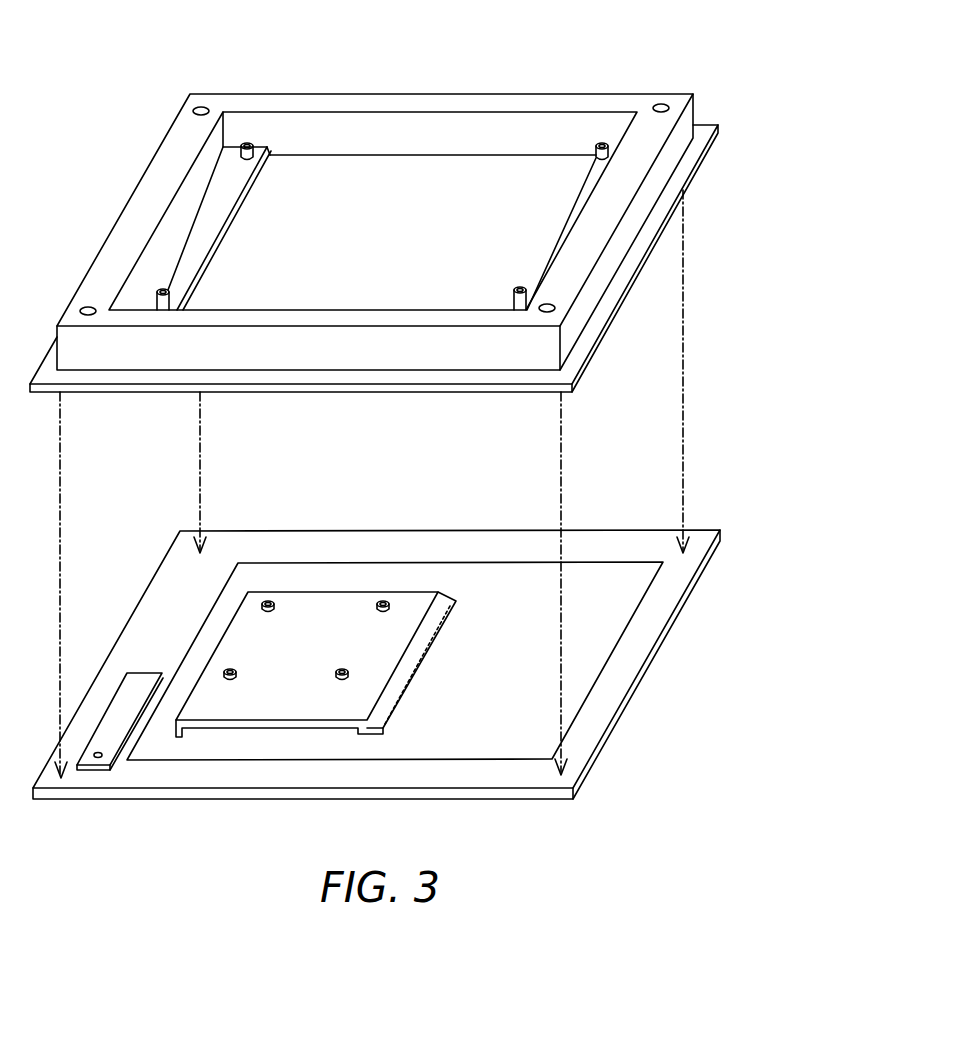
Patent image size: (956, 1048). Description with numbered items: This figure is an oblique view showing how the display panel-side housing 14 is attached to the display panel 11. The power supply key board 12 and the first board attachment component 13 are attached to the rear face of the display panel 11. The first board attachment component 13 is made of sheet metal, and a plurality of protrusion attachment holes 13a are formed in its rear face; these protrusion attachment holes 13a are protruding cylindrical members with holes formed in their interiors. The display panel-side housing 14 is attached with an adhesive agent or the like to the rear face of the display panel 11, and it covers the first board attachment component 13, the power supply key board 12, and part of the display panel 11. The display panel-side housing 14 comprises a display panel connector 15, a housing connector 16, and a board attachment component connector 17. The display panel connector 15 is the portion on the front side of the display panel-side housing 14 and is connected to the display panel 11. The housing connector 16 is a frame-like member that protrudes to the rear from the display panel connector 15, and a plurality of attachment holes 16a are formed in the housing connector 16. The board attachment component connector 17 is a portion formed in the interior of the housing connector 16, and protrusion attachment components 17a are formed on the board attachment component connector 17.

The display panel 11 is at (731, 548).
The power supply key board 12 is at (113, 717).
The first board attachment component 13 is at (432, 589).
The protrusion attachment holes 13a is at (373, 605).
The display panel-side housing 14 is at (737, 123).
The display panel connector 15 is at (704, 127).
The housing connector 16 is at (568, 99).
The attachment holes 16a is at (203, 107).
The board attachment component connector 17 is at (205, 233).
The protrusion attachment components 17a is at (250, 162).